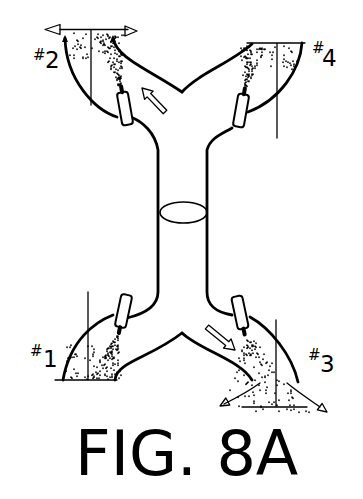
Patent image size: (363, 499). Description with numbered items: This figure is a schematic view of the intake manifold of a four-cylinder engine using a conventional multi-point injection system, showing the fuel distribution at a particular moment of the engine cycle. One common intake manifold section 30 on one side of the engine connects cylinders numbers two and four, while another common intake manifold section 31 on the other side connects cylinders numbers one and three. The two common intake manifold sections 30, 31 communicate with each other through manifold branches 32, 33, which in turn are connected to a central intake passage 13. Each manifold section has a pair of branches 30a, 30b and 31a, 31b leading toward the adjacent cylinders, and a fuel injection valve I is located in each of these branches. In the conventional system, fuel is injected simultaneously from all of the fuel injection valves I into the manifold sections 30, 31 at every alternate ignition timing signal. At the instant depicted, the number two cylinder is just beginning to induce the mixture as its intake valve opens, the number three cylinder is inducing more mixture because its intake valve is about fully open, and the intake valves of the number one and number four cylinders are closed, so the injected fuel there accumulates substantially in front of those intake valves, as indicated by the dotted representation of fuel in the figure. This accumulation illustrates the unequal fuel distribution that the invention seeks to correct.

The common intake manifold section 30 is at (181, 52).
The branch of manifold section 30a is at (130, 66).
The branch of manifold section 30b is at (233, 62).
The common intake manifold section 31 is at (181, 375).
The branch of manifold section 31a is at (122, 355).
The branch of manifold section 31b is at (233, 358).
The manifold branch 32 is at (168, 178).
The manifold branch 33 is at (194, 254).
The intake passage 13 is at (190, 207).
The fuel injection valve I is at (98, 126).